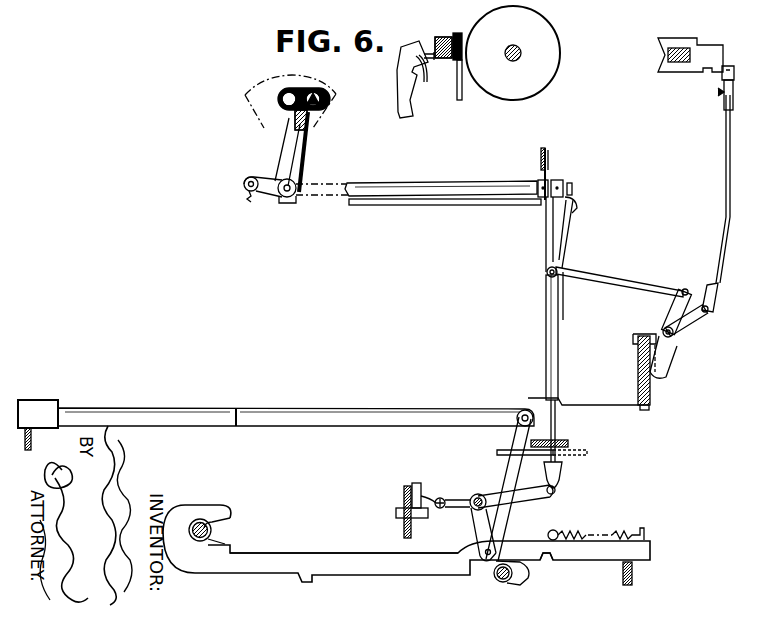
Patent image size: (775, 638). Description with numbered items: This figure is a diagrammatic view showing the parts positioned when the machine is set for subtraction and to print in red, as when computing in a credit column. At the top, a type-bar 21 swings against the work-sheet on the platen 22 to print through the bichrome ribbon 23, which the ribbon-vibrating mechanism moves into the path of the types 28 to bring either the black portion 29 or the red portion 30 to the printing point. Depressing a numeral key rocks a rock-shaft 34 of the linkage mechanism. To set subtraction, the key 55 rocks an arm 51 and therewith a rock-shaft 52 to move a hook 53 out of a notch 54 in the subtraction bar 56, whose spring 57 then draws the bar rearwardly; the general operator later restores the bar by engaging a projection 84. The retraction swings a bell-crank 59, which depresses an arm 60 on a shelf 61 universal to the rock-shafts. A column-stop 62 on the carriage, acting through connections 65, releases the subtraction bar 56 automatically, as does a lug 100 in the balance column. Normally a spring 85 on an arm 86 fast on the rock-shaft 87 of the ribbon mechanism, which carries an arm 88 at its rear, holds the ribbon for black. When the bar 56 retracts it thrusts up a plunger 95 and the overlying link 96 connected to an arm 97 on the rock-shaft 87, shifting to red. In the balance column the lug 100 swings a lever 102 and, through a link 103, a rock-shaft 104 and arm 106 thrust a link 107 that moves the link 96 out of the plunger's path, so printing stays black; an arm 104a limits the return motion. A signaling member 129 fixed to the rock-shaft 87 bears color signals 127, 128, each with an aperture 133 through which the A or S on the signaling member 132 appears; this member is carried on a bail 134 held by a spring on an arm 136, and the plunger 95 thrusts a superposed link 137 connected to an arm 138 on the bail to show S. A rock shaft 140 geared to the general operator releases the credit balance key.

The type-bar 21 is at (413, 112).
The platen 22 is at (513, 53).
The bichrome ribbon 23 is at (440, 39).
The types 28 is at (424, 85).
The black portion 29 is at (450, 34).
The red portion 30 is at (436, 58).
The rock-shaft 34 is at (402, 515).
The arm 51 is at (512, 468).
The rock-shaft 52 is at (496, 578).
The hook 53 is at (510, 584).
The notch 54 is at (548, 560).
The subtraction key 55 is at (52, 401).
The subtraction bar 56 is at (280, 552).
The spring 57 is at (580, 529).
The bell-crank 59 is at (470, 506).
The arm 60 is at (426, 519).
The shelf 61 is at (431, 496).
The column-stop 62 is at (688, 72).
The connections 65 is at (534, 579).
The projection 84 is at (305, 580).
The spring 85 is at (246, 192).
The arm 86 is at (257, 178).
The rock-shaft 87 is at (288, 198).
The arm 88 is at (549, 166).
The plunger 95 is at (556, 424).
The link 96 is at (546, 246).
The arm 97 is at (560, 184).
The lug 100 is at (734, 72).
The lever 102 is at (723, 98).
The link 103 is at (722, 245).
The rock-shaft 104 is at (664, 328).
The arm 104a is at (670, 354).
The arm 106 is at (681, 289).
The link 107 is at (632, 281).
The signal 127 is at (332, 100).
The signal 128 is at (294, 112).
The signaling member 129 is at (283, 148).
The signaling member 132 is at (303, 157).
The aperture 133 is at (333, 118).
The bail 134 is at (424, 206).
The arm 136 is at (262, 196).
The link 137 is at (558, 345).
The arm 138 is at (577, 206).
The rock shaft 140 is at (197, 541).